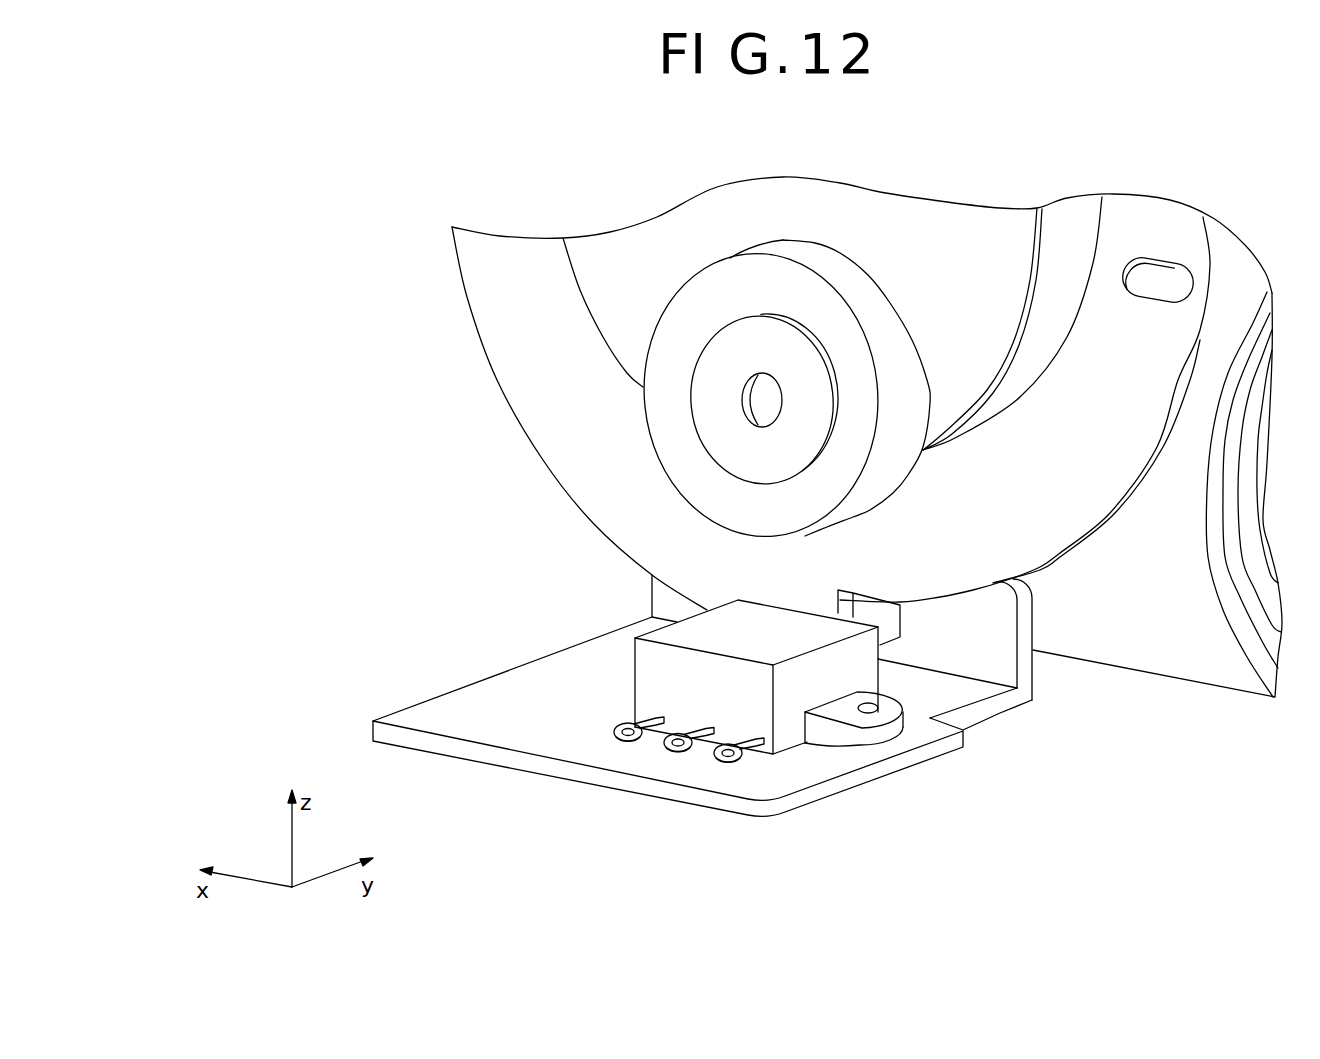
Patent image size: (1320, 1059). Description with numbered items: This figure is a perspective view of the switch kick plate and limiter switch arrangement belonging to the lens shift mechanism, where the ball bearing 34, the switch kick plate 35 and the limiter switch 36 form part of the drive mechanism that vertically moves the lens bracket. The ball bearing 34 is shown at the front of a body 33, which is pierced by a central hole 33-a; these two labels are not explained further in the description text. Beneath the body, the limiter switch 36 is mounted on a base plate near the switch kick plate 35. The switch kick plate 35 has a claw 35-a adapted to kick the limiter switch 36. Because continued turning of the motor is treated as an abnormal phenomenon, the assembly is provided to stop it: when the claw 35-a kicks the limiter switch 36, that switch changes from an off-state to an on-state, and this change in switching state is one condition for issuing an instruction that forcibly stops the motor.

The rotating body housing 33 is at (942, 263).
The shaft hole 33-a is at (763, 398).
The ball bearing 34 is at (833, 273).
The switch kick plate 35 is at (633, 507).
The claw 35-a is at (792, 598).
The limiter switch 36 is at (693, 703).